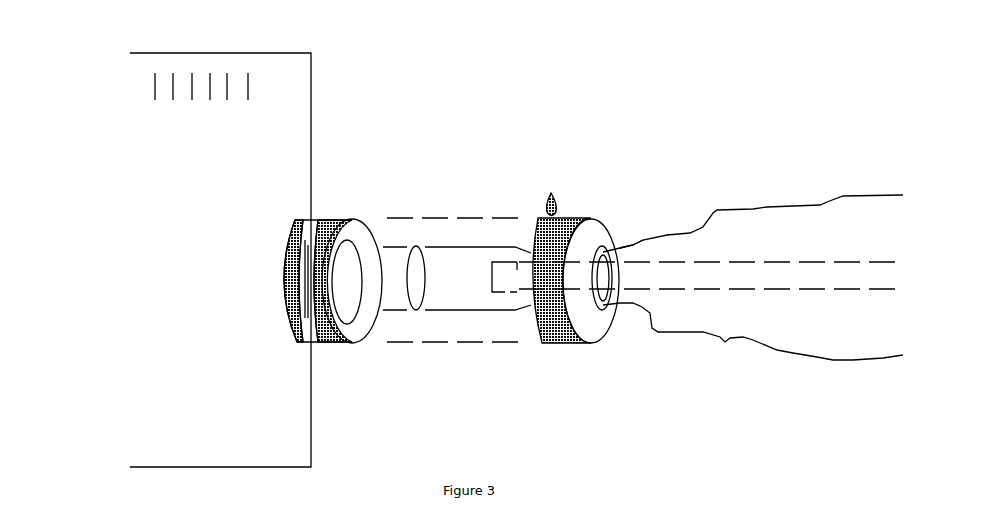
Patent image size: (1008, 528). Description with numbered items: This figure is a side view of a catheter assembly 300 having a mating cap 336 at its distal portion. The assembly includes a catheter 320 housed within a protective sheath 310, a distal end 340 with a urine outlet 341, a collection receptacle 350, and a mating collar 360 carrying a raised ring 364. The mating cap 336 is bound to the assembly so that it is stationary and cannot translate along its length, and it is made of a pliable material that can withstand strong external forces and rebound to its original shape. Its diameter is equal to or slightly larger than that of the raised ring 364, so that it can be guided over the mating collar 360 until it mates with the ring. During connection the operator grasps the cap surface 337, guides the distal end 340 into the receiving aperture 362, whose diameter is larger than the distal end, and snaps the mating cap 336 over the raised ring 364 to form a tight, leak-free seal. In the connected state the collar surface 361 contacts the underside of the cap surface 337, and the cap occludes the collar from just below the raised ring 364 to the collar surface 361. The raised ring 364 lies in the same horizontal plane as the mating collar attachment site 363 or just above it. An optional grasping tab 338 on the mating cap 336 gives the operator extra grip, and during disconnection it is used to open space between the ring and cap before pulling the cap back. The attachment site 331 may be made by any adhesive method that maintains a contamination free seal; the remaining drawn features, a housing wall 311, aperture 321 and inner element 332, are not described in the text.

The catheter assembly 300 is at (92, 265).
The protective sheath 310 is at (768, 207).
The housing wall 311 is at (630, 247).
The catheter 320 is at (752, 275).
The aperture 321 is at (503, 275).
The attachment site 331 is at (598, 256).
The lens 332 is at (602, 295).
The mating cap 336 is at (560, 330).
The cap surface 337 is at (590, 320).
The grasping tab 338 is at (551, 192).
The distal end 340 is at (452, 268).
The urine outlet 341 is at (418, 280).
The collection receptacle 350 is at (291, 112).
The mating collar 360 is at (320, 343).
The collar surface 361 is at (349, 318).
The receiving aperture 362 is at (345, 265).
The mating collar attachment site 363 is at (295, 220).
The raised ring 364 is at (313, 238).